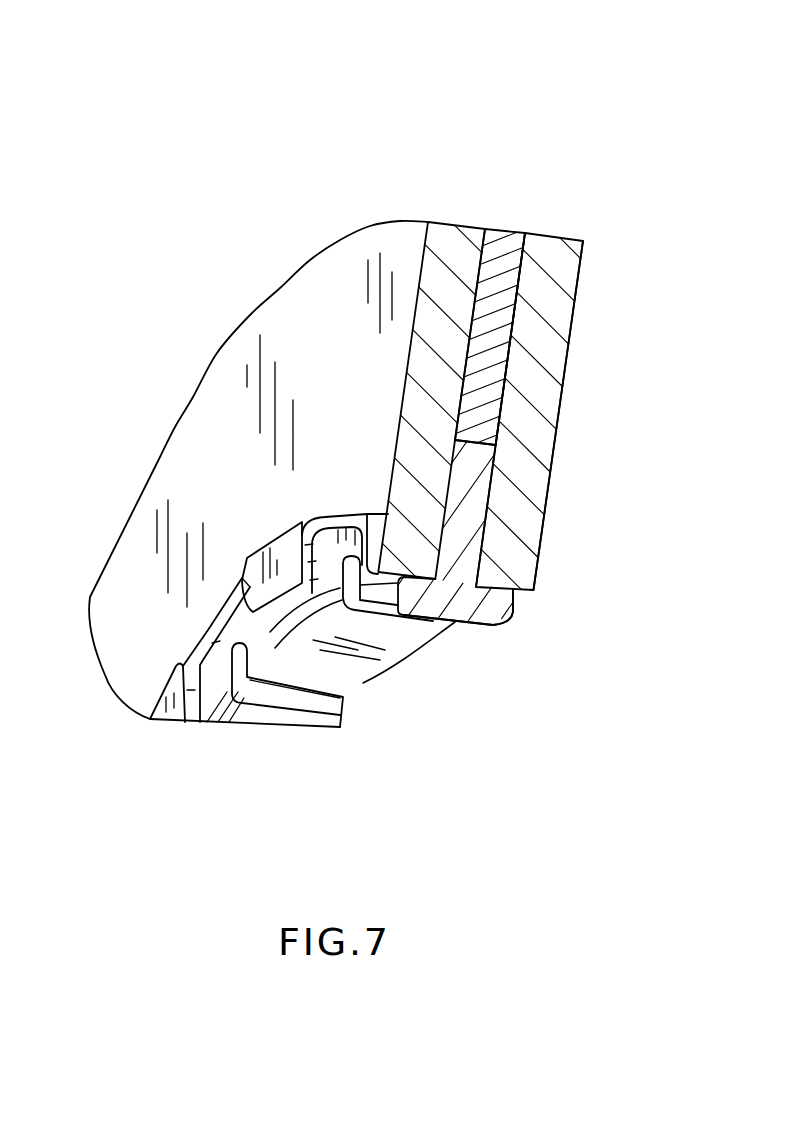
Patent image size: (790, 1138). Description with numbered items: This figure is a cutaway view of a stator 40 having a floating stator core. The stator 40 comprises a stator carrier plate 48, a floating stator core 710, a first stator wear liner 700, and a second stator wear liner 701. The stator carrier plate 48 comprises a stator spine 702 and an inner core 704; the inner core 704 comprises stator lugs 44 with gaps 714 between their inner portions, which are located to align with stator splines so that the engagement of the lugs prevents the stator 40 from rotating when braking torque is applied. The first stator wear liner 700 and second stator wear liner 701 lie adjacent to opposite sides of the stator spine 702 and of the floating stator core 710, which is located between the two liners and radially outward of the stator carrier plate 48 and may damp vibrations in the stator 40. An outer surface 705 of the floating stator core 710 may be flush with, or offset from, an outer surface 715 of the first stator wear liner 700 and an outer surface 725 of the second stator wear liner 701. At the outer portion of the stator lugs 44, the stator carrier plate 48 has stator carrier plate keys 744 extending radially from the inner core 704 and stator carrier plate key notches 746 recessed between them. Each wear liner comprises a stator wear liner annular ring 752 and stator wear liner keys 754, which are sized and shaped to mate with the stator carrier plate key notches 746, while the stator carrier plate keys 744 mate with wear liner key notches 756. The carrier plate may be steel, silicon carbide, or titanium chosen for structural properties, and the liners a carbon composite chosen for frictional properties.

The stator 40 is at (527, 97).
The stator lugs 44 is at (320, 728).
The stator carrier plate 48 is at (515, 611).
The first stator wear liner 700 is at (290, 275).
The second stator wear liner 701 is at (581, 264).
The stator spine 702 is at (493, 495).
The inner core 704 is at (478, 633).
The outer surface of floating stator core 705 is at (507, 230).
The floating stator core 710 is at (510, 350).
The gaps 714 is at (275, 716).
The outer surface of first stator wear liner 715 is at (447, 222).
The outer surface of second stator wear liner 725 is at (575, 238).
The stator carrier plate keys 744 is at (227, 647).
The stator carrier plate key notches 746 is at (294, 616).
The stator wear liner annular ring 752 is at (215, 415).
The stator wear liner keys 754 is at (267, 557).
The wear liner key notches 756 is at (200, 620).